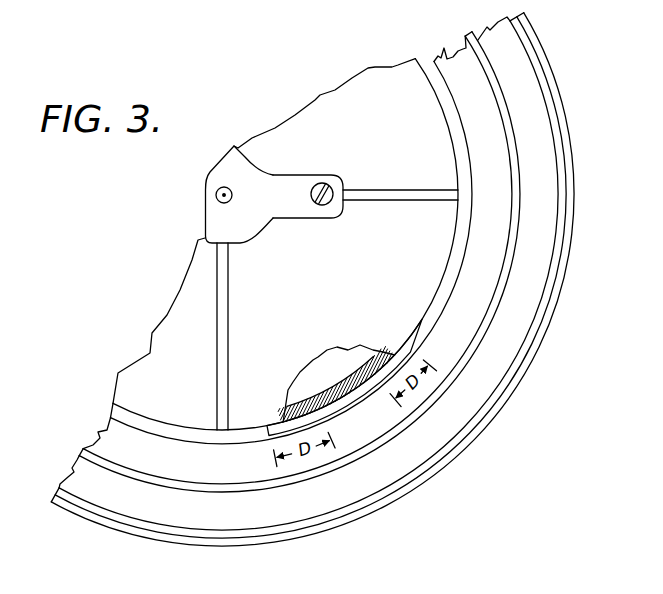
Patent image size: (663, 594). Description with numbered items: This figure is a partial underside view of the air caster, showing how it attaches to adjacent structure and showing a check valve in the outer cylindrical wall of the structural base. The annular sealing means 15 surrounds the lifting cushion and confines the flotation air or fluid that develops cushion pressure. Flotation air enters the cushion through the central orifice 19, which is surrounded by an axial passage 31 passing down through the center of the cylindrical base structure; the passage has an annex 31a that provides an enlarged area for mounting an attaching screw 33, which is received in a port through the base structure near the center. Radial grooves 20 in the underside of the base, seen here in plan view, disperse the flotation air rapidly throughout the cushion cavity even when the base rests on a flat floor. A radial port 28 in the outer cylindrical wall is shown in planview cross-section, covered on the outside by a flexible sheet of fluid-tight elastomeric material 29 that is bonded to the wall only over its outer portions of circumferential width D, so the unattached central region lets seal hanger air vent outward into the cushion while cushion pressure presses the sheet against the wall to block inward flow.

The annular sealing means 15 is at (340, 527).
The orifice 19 is at (216, 189).
The radial grooves 20 is at (372, 190).
The radial port 28 is at (340, 390).
The flexible sheet of fluid-tight elastomeric material 29 is at (420, 318).
The axial passage 31 is at (233, 233).
The annex 31a is at (306, 208).
The attaching bolt or screw 33 is at (324, 183).